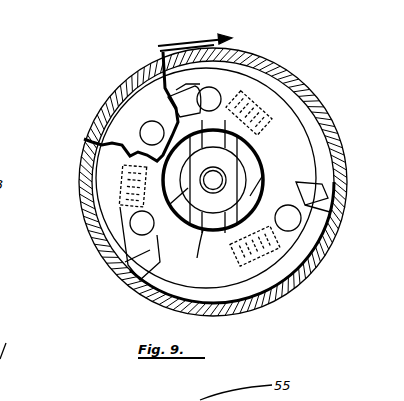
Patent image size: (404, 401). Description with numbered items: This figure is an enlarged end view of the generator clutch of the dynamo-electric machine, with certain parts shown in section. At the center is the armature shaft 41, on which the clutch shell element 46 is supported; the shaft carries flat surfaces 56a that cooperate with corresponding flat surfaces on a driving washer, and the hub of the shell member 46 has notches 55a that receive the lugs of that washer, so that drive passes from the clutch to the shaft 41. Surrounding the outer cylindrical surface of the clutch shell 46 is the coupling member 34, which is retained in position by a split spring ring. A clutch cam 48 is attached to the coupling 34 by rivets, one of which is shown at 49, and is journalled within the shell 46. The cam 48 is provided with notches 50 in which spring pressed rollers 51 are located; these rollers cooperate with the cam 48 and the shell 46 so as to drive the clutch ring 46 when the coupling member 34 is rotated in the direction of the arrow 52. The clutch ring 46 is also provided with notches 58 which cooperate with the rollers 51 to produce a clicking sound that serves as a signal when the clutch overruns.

The coupling member 34 is at (80, 213).
The armature shaft 41 is at (222, 162).
The clutch shell element 46 is at (103, 160).
The clutch cam 48 is at (126, 284).
The rivet 49 is at (150, 131).
The notches 50 is at (166, 106).
The spring pressed rollers 51 is at (214, 92).
The arrow 52 is at (195, 31).
The notches 55a is at (258, 125).
The flat surfaces 56a is at (240, 181).
The notches 58 is at (176, 84).